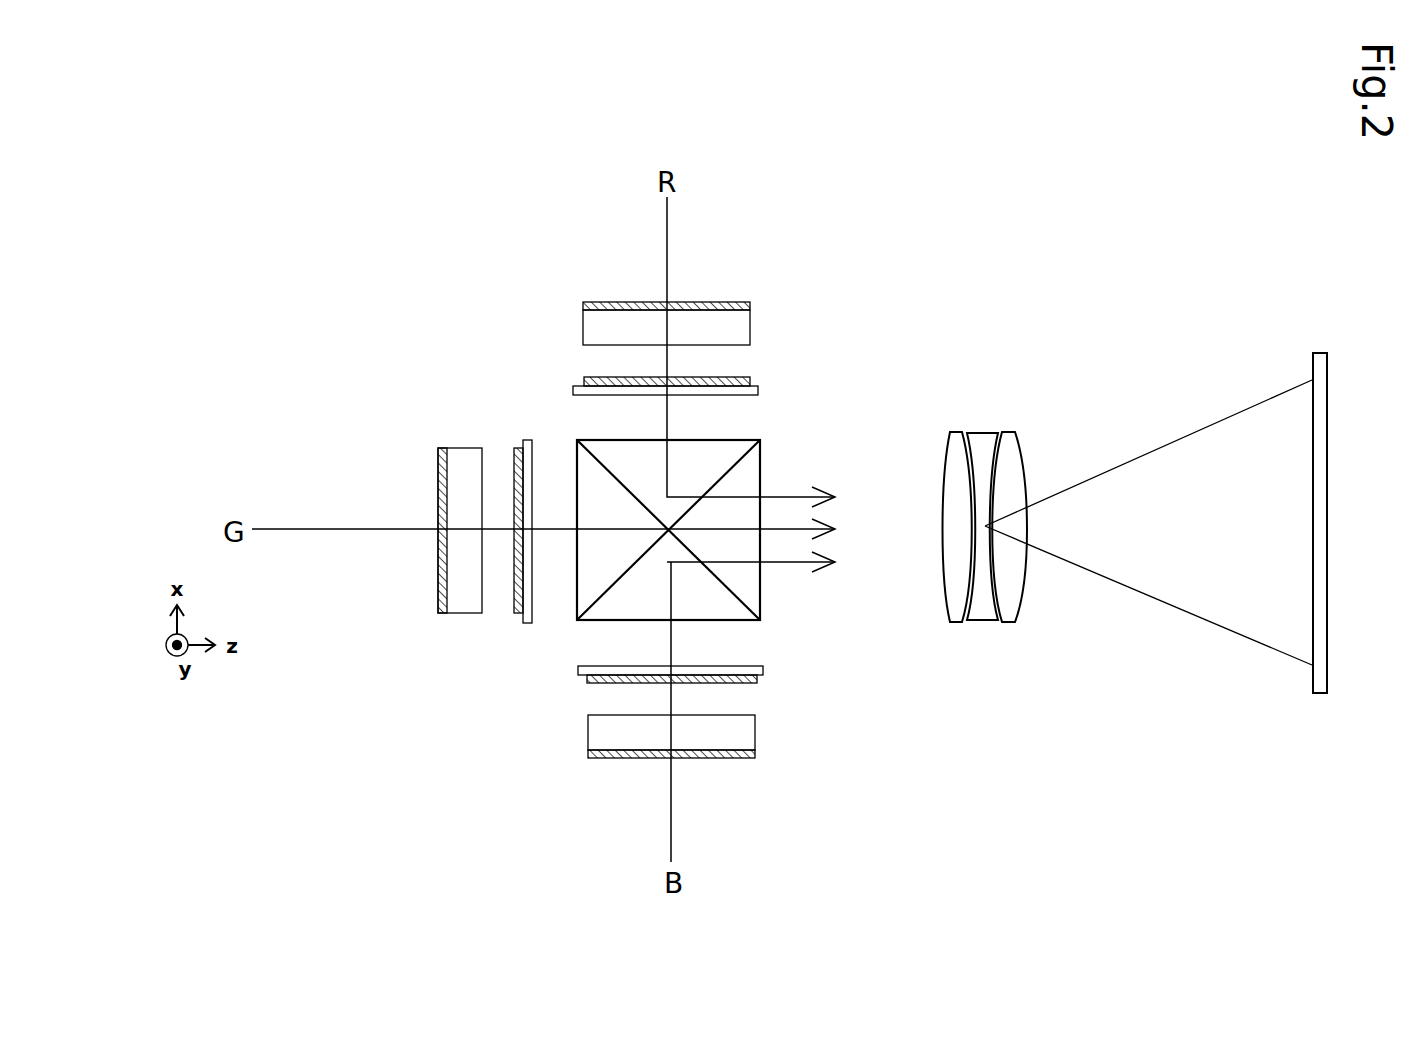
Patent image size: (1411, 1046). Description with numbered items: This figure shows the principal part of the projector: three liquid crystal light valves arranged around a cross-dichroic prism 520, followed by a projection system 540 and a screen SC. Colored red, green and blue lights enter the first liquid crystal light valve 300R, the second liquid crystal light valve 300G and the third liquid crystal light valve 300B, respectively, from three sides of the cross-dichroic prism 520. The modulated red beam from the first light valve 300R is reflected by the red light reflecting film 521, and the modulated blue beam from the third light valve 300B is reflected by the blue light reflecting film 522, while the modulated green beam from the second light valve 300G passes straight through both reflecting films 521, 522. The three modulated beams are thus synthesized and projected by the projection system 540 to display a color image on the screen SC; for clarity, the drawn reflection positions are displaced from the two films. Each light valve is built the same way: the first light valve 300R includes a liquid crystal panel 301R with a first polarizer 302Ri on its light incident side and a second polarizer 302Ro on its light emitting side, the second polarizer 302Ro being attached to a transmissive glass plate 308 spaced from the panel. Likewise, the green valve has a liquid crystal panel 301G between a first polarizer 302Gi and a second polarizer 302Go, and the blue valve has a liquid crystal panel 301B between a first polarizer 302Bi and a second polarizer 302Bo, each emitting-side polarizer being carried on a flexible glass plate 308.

The first liquid crystal light valve 300R is at (799, 346).
The first polarizer 302Ri is at (750, 305).
The liquid crystal panel 301R is at (750, 327).
The second polarizer 302Ro is at (750, 380).
The transmissive glass plate 308 is at (758, 390).
The third liquid crystal light valve 300B is at (801, 712).
The second polarizer 302Bo is at (757, 680).
The liquid crystal panel 301B is at (755, 725).
The first polarizer 302Bi is at (755, 752).
The second liquid crystal light valve 300G is at (388, 635).
The first polarizer 302Gi is at (443, 613).
The liquid crystal panel 301G is at (468, 613).
The second polarizer 302Go is at (520, 623).
The cross-dichroic prism 520 is at (733, 518).
The red light reflecting film 521 is at (730, 472).
The blue light reflecting film 522 is at (722, 574).
The projection system 540 is at (985, 432).
The screen SC is at (1318, 350).